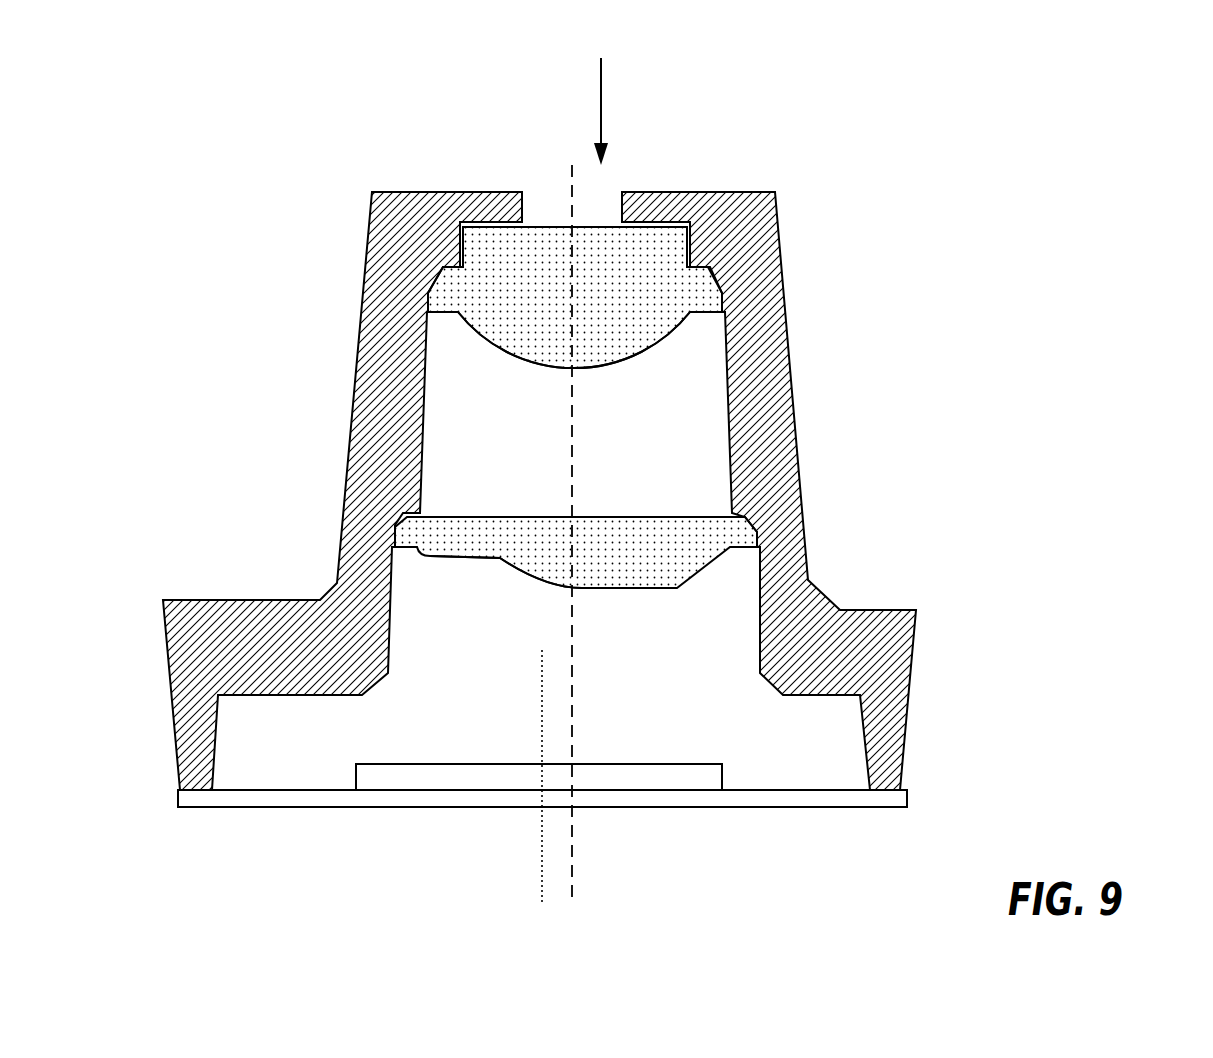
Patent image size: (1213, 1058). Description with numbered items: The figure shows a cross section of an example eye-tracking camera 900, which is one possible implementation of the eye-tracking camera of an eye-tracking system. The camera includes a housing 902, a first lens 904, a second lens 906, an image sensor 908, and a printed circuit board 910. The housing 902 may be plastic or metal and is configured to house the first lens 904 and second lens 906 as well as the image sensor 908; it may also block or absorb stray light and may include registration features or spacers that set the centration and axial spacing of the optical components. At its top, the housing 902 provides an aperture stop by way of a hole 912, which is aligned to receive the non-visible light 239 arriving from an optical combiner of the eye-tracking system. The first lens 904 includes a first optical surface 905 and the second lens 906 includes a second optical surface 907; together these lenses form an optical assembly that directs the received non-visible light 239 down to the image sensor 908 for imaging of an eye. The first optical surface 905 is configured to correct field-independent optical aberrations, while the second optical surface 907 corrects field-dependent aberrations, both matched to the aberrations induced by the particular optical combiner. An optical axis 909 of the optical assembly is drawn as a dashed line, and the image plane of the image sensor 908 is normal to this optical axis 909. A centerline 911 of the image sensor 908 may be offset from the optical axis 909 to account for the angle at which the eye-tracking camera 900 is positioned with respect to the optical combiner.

The eye-tracking camera 900 is at (669, 466).
The housing 902 is at (780, 218).
The first lens 904 is at (575, 297).
The first optical surface 905 is at (545, 371).
The second lens 906 is at (576, 552).
The second optical surface 907 is at (536, 566).
The image sensor 908 is at (629, 768).
The optical axis 909 is at (572, 866).
The printed circuit board 910 is at (765, 803).
The centerline 911 is at (542, 856).
The hole 912 is at (537, 199).
The non-visible light 239 is at (605, 87).